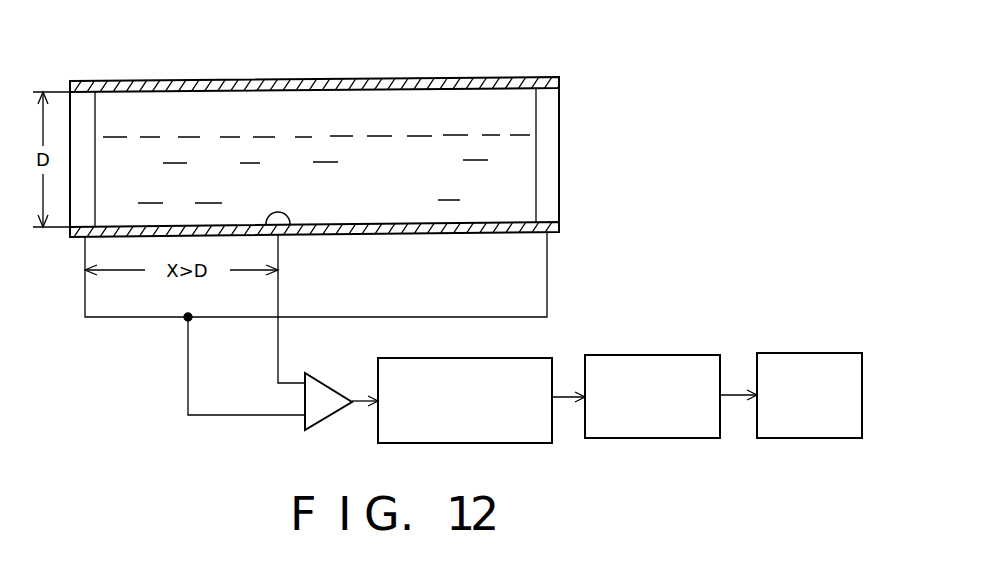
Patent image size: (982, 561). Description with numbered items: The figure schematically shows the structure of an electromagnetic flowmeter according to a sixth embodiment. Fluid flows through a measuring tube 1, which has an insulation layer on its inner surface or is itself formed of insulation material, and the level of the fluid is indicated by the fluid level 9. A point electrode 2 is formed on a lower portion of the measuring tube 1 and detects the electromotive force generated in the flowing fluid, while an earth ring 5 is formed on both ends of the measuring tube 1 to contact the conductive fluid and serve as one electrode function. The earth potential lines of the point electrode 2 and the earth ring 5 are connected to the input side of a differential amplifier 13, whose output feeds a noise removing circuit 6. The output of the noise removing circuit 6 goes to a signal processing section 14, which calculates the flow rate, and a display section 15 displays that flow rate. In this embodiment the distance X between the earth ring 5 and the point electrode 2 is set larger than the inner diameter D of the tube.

The measuring tube 1 is at (312, 78).
The earth ring 5 is at (80, 100).
The level of fluid 9 is at (305, 135).
The point electrode 2 is at (284, 214).
The differential amplifier 13 is at (327, 397).
The noise removing circuit 6 is at (488, 363).
The signal processing section 14 is at (661, 356).
The display section 15 is at (804, 354).